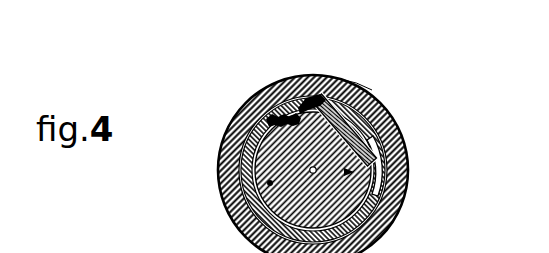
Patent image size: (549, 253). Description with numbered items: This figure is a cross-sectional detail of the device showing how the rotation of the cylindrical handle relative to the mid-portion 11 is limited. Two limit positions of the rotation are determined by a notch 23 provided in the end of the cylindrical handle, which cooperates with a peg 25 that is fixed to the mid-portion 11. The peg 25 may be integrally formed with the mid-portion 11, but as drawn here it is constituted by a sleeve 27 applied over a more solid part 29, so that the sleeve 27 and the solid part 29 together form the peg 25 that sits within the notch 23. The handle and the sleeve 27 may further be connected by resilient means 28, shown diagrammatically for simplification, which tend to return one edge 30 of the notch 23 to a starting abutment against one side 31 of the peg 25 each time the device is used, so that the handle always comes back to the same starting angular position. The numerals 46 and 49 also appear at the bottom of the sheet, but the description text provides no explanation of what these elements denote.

The channel slot 11 is at (381, 178).
The tube wall 23 is at (380, 128).
The tube upper wall portion 25 is at (350, 82).
The core member 27 is at (349, 182).
The seal 28 is at (282, 116).
The sleeve 29 is at (236, 211).
The retaining element 30 is at (307, 100).
The diagonal bar 31 is at (327, 82).
The lower member 46 is at (38, 248).
The connecting member 49 is at (84, 252).